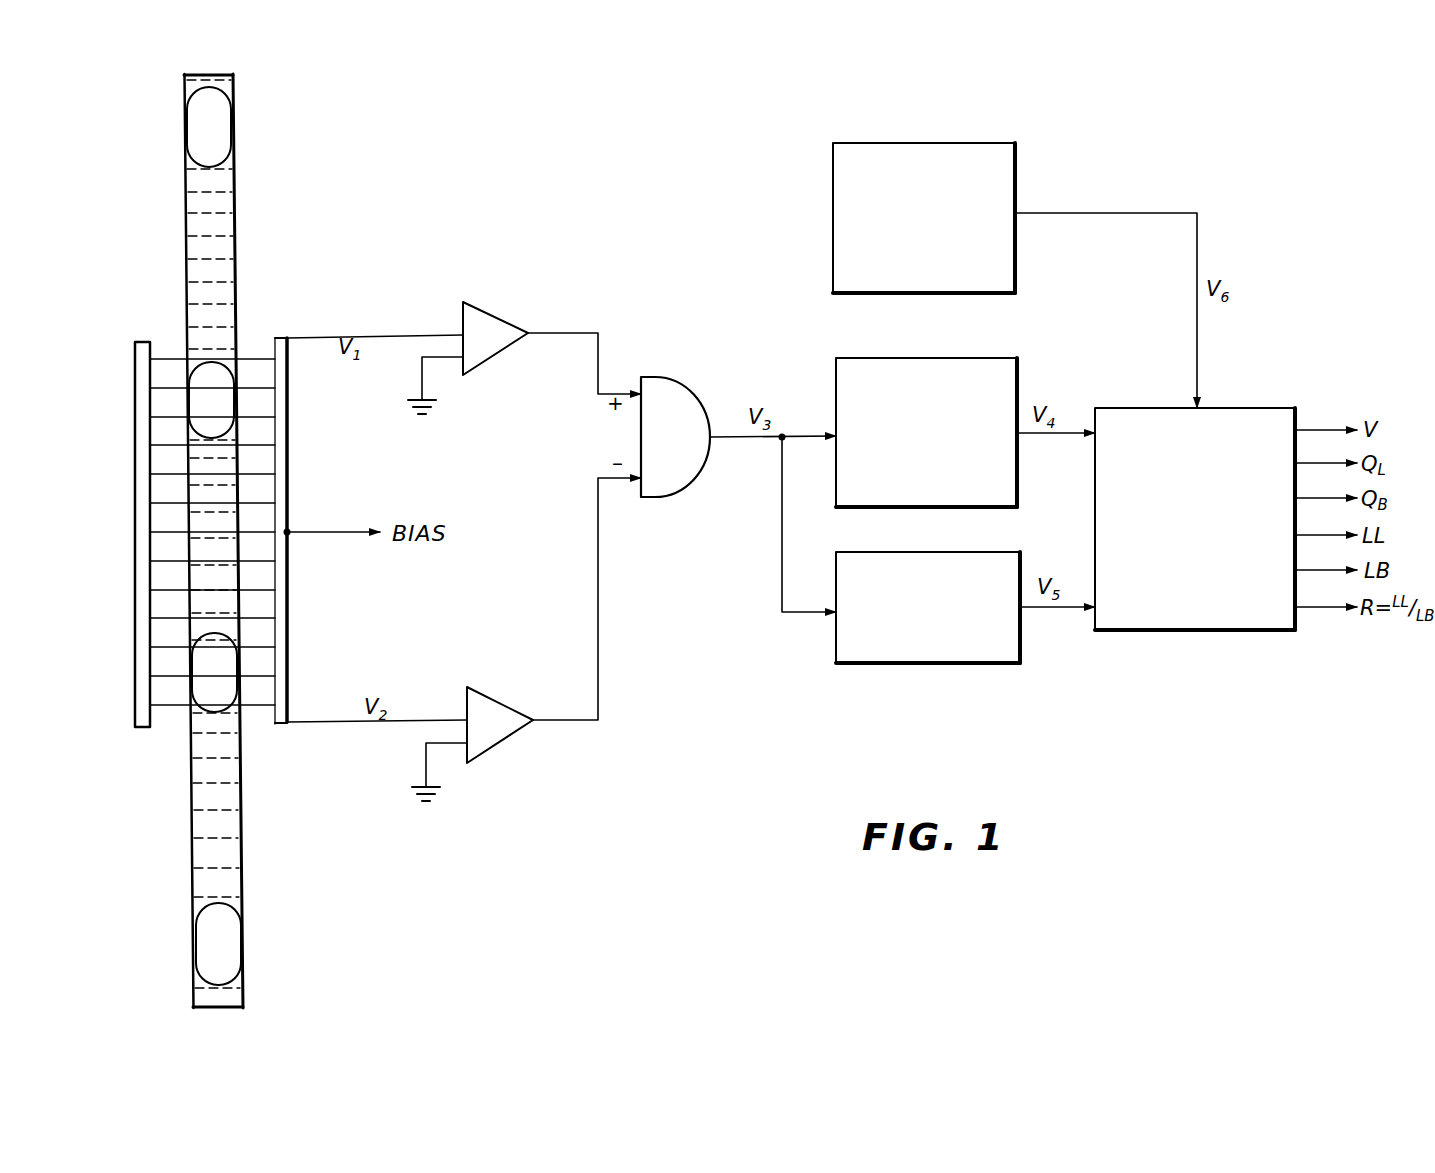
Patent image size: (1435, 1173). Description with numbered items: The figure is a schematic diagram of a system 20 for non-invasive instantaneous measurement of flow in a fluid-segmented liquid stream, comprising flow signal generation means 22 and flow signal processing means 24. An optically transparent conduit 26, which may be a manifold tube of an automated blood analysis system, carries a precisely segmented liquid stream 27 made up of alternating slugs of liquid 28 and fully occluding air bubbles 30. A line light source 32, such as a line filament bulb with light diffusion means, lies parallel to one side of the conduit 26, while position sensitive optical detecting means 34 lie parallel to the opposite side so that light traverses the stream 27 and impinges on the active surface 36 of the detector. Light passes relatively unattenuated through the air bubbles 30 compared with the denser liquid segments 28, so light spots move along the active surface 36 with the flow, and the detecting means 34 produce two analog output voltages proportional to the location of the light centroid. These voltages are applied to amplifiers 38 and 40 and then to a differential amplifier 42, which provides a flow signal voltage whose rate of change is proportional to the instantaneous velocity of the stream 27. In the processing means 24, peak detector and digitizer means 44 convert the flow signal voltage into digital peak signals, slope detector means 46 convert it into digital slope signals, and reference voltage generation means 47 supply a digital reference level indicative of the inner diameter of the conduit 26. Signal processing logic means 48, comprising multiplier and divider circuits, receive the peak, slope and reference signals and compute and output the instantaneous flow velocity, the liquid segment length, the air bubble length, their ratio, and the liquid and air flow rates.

The flow measurement system 20 is at (835, 703).
The flow signal generation means 22 is at (388, 305).
The flow signal processing means 24 is at (800, 236).
The conduit 26 is at (238, 251).
The fluid segmented liquid stream 27 is at (203, 300).
The slugs of liquid 28 is at (227, 209).
The air bubbles 30 is at (227, 128).
The line light source 32 is at (135, 637).
The position sensitive optical detecting means 34 is at (290, 614).
The active surface 36 is at (266, 342).
The amplifier 38 is at (485, 313).
The amplifier 40 is at (498, 743).
The differential amplifier 42 is at (685, 386).
The peak detector and digitizer means 44 is at (836, 486).
The slope detector means 46 is at (970, 665).
The reference voltage generation means 47 is at (921, 143).
The signal processing logic means 48 is at (1176, 632).